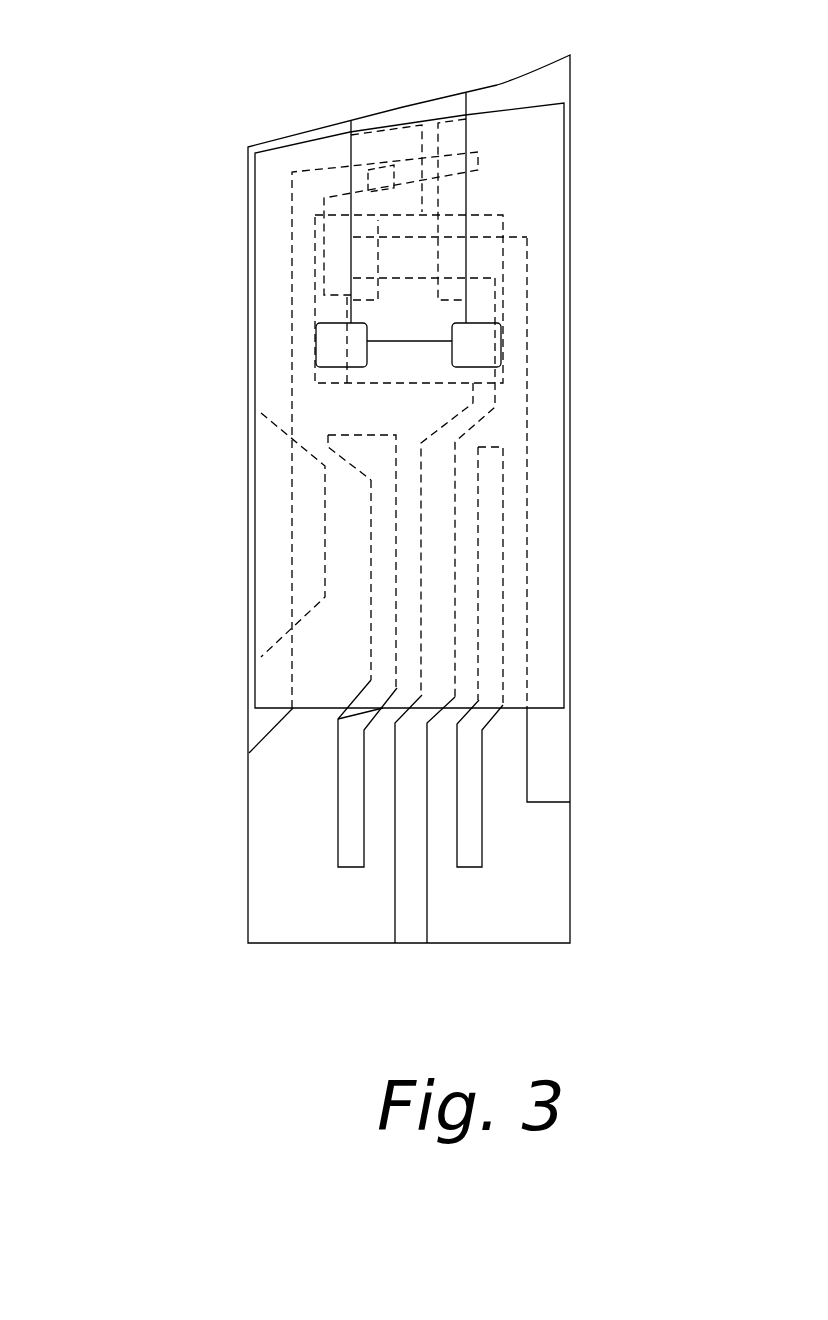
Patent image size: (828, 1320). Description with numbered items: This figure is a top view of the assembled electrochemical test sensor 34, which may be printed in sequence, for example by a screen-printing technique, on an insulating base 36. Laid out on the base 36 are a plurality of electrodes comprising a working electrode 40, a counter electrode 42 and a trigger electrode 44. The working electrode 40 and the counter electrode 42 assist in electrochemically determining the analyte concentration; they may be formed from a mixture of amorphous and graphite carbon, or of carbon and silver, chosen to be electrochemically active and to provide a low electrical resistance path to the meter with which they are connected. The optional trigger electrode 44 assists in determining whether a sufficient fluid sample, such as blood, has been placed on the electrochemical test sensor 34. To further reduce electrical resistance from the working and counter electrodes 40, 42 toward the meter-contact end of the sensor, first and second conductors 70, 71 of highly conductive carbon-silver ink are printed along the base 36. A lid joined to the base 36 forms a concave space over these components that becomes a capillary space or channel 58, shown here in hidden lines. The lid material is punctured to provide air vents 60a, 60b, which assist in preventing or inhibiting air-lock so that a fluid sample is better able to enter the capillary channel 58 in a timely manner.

The electrochemical test sensor 34 is at (365, 483).
The insulating base 36 is at (592, 900).
The working electrode 40 is at (428, 258).
The counter electrode 42 is at (420, 316).
The trigger electrode 44 is at (428, 165).
The capillary space or channel 58 is at (400, 104).
The air vent 60a is at (487, 335).
The air vent 60b is at (322, 333).
The first conductor 70 is at (475, 777).
The second conductor 71 is at (347, 776).